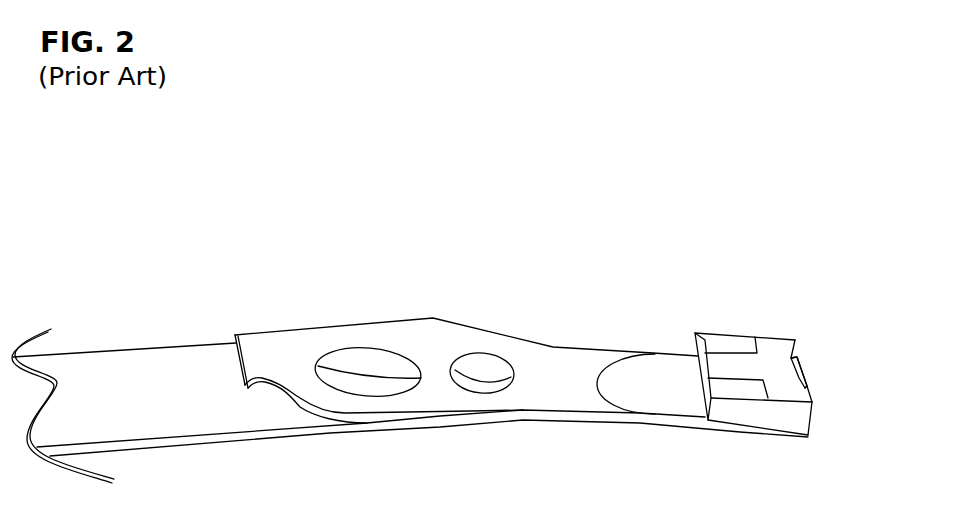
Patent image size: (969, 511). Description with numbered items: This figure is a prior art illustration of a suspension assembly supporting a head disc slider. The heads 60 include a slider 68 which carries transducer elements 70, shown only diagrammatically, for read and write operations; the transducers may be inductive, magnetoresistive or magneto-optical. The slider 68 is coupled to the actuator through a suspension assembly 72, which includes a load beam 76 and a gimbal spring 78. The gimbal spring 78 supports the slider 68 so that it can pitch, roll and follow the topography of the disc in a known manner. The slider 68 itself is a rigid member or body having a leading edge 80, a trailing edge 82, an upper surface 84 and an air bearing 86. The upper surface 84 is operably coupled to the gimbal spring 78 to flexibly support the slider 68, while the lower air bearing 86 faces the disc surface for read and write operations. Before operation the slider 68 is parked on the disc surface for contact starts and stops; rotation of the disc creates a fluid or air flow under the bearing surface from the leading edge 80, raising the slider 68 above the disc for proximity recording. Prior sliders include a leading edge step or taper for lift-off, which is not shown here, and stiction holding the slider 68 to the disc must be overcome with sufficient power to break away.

The heads 60 is at (754, 347).
The slider 68 is at (738, 378).
The transducer elements 70 is at (800, 367).
The suspension assembly 72 is at (433, 300).
The load beam 76 is at (157, 405).
The gimbal spring 78 is at (515, 352).
The leading edge 80 is at (705, 395).
The trailing edge 82 is at (813, 410).
The upper surface 84 is at (775, 435).
The air bearing 86 is at (712, 342).